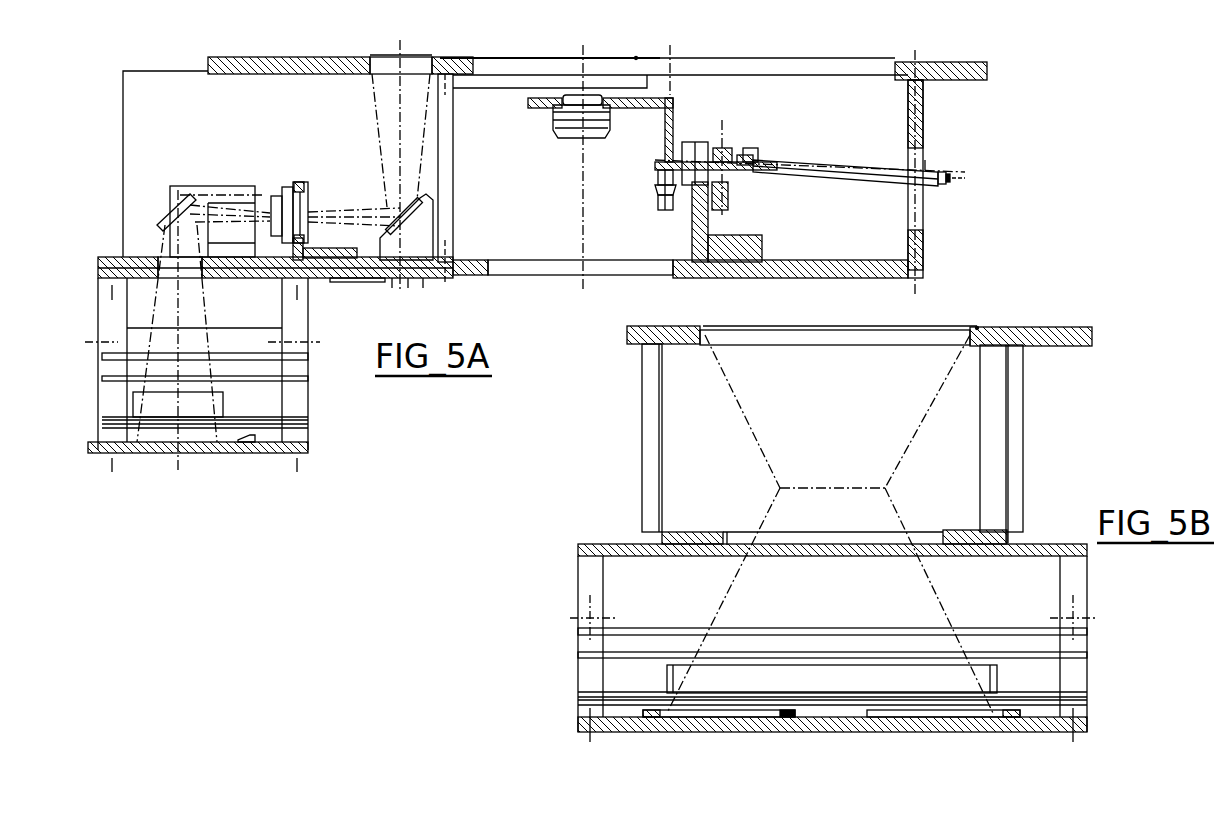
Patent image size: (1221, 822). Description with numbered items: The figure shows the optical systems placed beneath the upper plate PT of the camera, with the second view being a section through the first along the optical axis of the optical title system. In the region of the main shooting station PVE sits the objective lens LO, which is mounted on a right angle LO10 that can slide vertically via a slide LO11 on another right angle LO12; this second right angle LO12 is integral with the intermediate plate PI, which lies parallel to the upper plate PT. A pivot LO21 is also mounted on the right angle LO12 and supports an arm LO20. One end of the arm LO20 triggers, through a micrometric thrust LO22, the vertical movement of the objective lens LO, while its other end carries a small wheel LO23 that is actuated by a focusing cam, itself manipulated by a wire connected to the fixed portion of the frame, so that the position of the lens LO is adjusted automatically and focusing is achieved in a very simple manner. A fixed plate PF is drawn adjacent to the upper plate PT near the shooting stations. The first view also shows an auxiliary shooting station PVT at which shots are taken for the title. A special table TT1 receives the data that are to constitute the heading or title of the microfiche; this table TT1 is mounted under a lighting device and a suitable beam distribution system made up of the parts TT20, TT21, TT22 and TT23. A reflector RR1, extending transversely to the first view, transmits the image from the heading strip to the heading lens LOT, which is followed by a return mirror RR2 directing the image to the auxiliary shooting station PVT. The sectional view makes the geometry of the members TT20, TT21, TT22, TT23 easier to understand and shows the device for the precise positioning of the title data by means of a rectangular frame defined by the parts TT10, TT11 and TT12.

In FIG. 5A, the upper plate PT is at (253, 66).
In FIG. 5B, the upper plate PT is at (1082, 335).
In FIG. 5A, the auxiliary shooting station PVT is at (392, 57).
In FIG. 5A, the fixed plate PF is at (488, 58).
In FIG. 5A, the main shooting station PVE is at (565, 70).
In FIG. 5A, the reflector RR1 is at (165, 205).
In FIG. 5A, the heading lens LOT is at (286, 185).
In FIG. 5A, the return mirror RR2 is at (388, 205).
In FIG. 5A, the objective lens LO is at (565, 140).
In FIG. 5A, the right angle LO10 is at (675, 104).
In FIG. 5A, the slide LO11 is at (684, 143).
In FIG. 5A, the pivot LO21 is at (725, 149).
In FIG. 5A, the arm LO20 is at (826, 165).
In FIG. 5A, the micrometric thrust LO22 is at (660, 202).
In FIG. 5A, the right angle LO12 is at (695, 242).
In FIG. 5A, the small wheel LO23 is at (945, 180).
In FIG. 5A, the intermediate plate PI is at (862, 262).
In FIG. 5B, the intermediate plate PI is at (960, 533).
In FIG. 5A, the table TT1 is at (157, 452).
In FIG. 5B, the table TT1 is at (735, 733).
In FIG. 5A, the beam distribution part TT23 is at (103, 356).
In FIG. 5B, the beam distribution part TT23 is at (580, 632).
In FIG. 5A, the beam distribution part TT22 is at (103, 380).
In FIG. 5B, the beam distribution part TT22 is at (580, 655).
In FIG. 5A, the beam distribution part TT21 is at (135, 408).
In FIG. 5B, the beam distribution part TT21 is at (667, 675).
In FIG. 5A, the beam distribution part TT20 is at (103, 424).
In FIG. 5B, the beam distribution part TT20 is at (580, 696).
In FIG. 5B, the frame part TT10 is at (650, 718).
In FIG. 5B, the frame part TT11 is at (788, 718).
In FIG. 5B, the frame part TT12 is at (1012, 718).